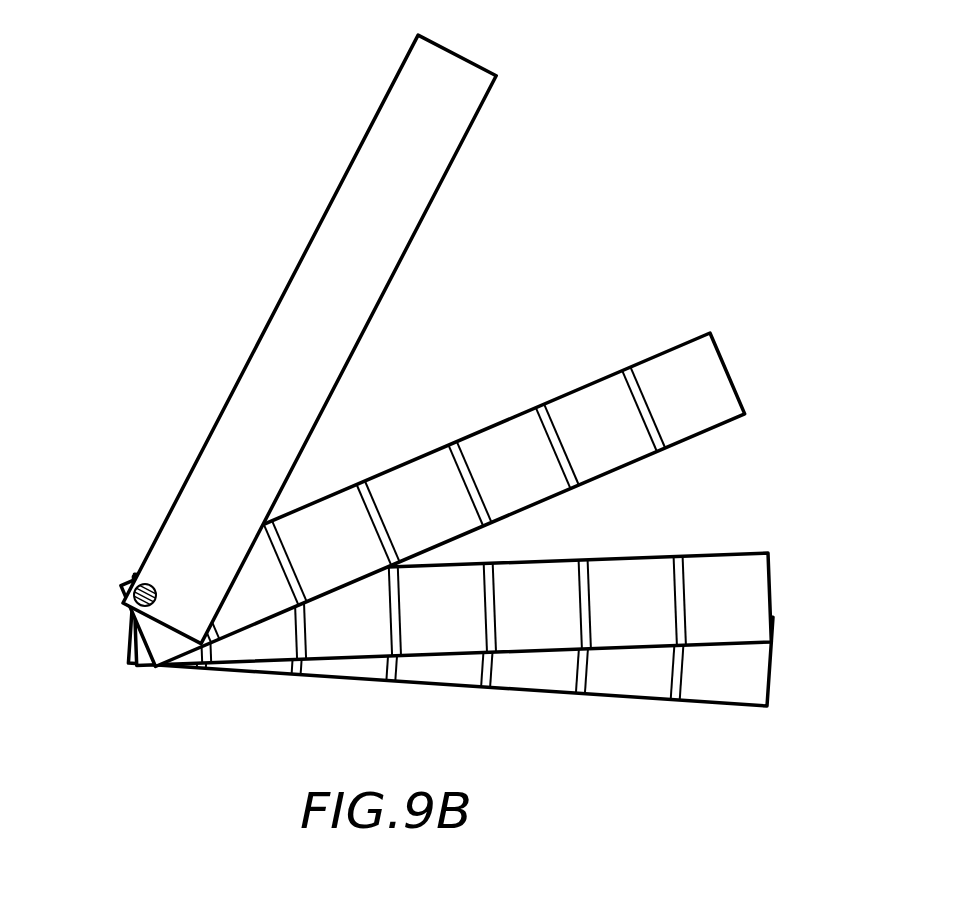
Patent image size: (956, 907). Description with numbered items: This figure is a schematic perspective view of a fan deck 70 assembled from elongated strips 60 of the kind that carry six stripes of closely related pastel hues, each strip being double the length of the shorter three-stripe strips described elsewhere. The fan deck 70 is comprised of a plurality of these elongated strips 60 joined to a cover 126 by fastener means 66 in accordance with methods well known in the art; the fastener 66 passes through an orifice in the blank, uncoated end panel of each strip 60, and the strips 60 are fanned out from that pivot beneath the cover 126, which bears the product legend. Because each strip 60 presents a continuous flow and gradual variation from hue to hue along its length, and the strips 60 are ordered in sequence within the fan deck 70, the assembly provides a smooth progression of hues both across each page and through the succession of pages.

The strip 60 is at (499, 546).
The fastener 66 is at (132, 612).
The fan deck 70 is at (724, 711).
The cover 126 is at (190, 512).